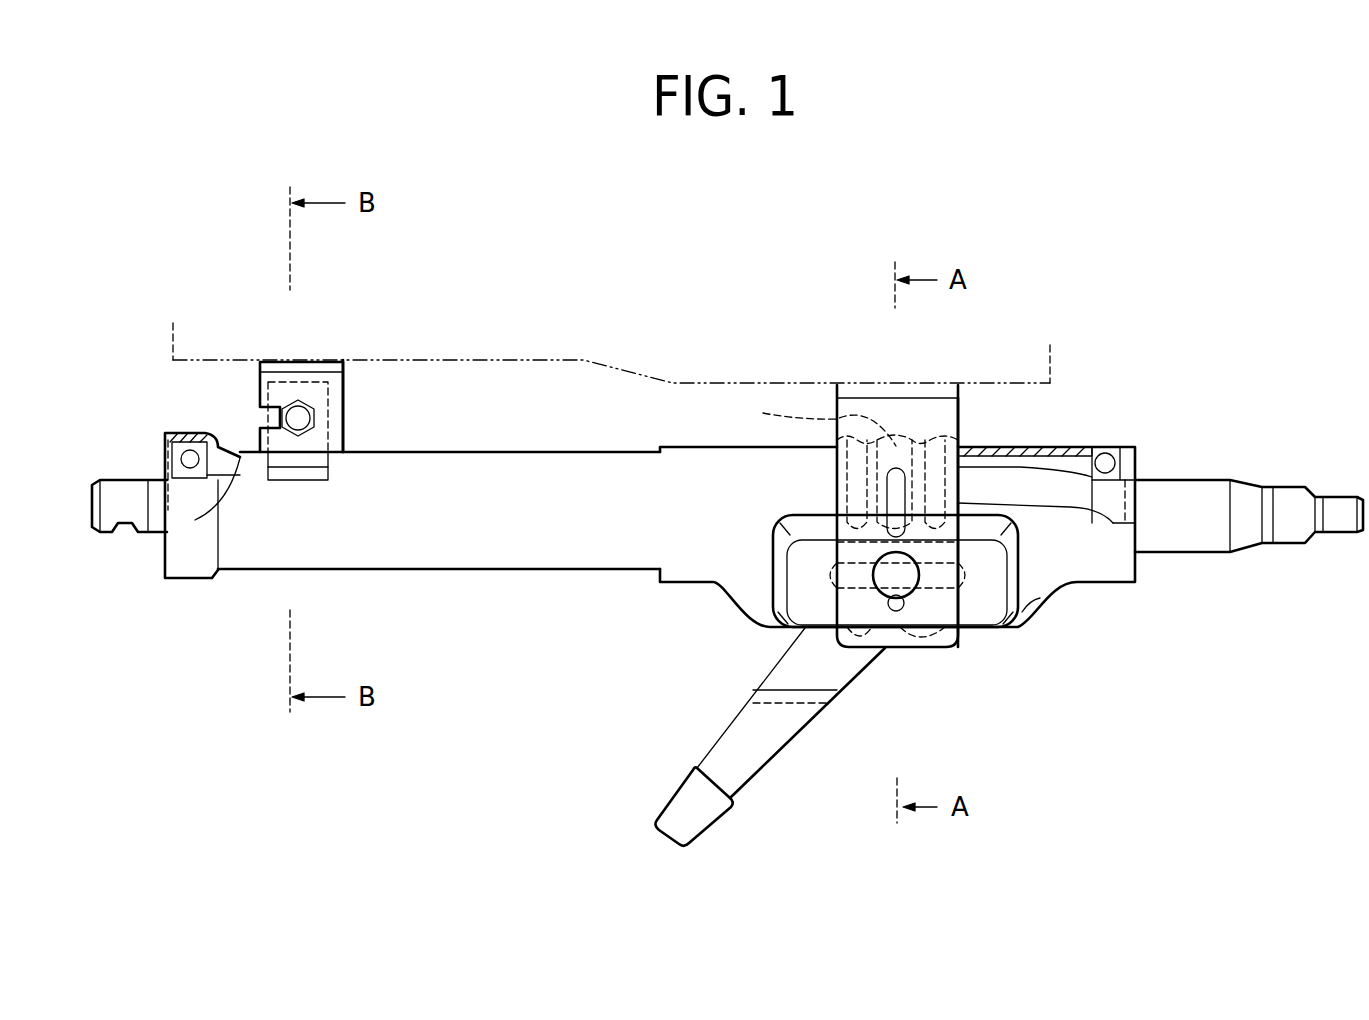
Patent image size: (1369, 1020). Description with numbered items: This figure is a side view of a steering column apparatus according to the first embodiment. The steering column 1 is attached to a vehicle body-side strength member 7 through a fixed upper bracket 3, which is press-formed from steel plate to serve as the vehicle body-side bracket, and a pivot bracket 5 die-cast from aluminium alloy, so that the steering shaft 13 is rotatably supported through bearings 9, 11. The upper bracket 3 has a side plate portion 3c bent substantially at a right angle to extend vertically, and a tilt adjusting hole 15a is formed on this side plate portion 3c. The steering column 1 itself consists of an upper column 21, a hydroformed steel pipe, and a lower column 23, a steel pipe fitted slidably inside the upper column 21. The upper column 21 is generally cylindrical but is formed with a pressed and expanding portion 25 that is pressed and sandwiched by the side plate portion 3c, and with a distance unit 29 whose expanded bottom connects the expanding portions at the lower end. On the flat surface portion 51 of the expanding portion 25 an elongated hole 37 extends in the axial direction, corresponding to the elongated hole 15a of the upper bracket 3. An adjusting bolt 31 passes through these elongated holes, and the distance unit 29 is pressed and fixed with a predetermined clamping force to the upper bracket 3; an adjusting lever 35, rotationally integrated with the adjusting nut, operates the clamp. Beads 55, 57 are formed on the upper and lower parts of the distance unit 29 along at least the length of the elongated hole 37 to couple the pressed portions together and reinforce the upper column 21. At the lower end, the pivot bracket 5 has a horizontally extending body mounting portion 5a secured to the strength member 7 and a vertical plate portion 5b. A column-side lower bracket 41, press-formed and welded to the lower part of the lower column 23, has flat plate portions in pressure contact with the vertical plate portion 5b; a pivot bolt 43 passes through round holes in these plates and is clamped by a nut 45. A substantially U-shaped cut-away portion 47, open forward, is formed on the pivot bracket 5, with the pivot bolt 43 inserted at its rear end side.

The steering column 1 is at (570, 642).
The upper bracket 3 is at (926, 395).
The side plate portion 3c is at (950, 418).
The pivot bracket 5 is at (343, 397).
The body mounting portion 5a is at (275, 365).
The vertical plate portion 5b is at (340, 385).
The body-side strength member 7 is at (630, 372).
The bearing 9 is at (1107, 455).
The bearing 11 is at (172, 462).
The steering shaft 13 is at (1197, 495).
The tilt adjusting hole 15a is at (900, 542).
The upper column 21 is at (1098, 588).
The lower column 23 is at (408, 548).
The pressed and expanding portion 25 is at (1018, 608).
The distance unit 29 is at (755, 628).
The adjusting bolt 31 is at (877, 597).
The adjusting lever 35 is at (753, 742).
The elongated hole 37 is at (975, 577).
The column-side lower bracket 41 is at (283, 468).
The pivot bolt 43 is at (371, 424).
The nut 45 is at (310, 424).
The cut-away portion 47 is at (262, 411).
The flat surface portion 51 is at (823, 610).
The bead 55 is at (763, 413).
The bead 57 is at (897, 648).